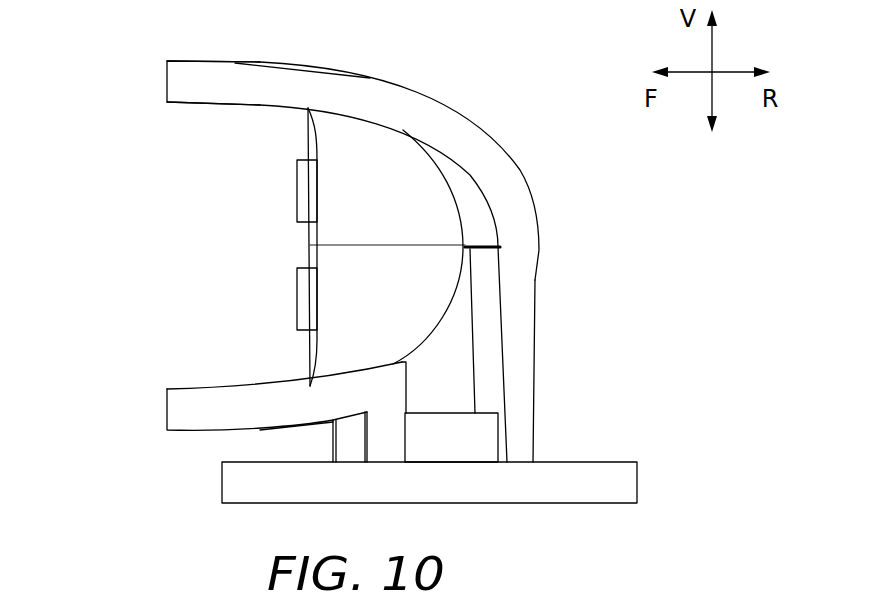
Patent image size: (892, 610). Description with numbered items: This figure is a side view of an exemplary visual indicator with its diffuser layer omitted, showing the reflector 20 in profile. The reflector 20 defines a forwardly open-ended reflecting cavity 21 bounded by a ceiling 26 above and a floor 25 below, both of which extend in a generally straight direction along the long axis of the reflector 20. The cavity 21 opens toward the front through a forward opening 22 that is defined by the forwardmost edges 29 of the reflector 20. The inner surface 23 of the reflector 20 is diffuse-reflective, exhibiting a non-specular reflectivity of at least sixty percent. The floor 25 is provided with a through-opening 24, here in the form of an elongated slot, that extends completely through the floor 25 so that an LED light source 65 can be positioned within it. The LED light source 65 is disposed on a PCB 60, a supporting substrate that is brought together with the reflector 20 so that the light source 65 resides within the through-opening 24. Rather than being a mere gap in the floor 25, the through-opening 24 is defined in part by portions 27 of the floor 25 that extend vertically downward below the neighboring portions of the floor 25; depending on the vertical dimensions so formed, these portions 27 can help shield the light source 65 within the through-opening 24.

The reflector 20 is at (478, 135).
The reflecting cavity 21 is at (232, 263).
The forward opening 22 is at (175, 250).
The inner surface 23 is at (481, 190).
The through-opening 24 is at (432, 398).
The floor 25 is at (185, 413).
The ceiling 26 is at (188, 80).
The portions of floor 27 is at (523, 438).
The forwardmost edges 29 is at (167, 397).
The PCB 60 is at (494, 484).
The LED light source 65 is at (467, 455).